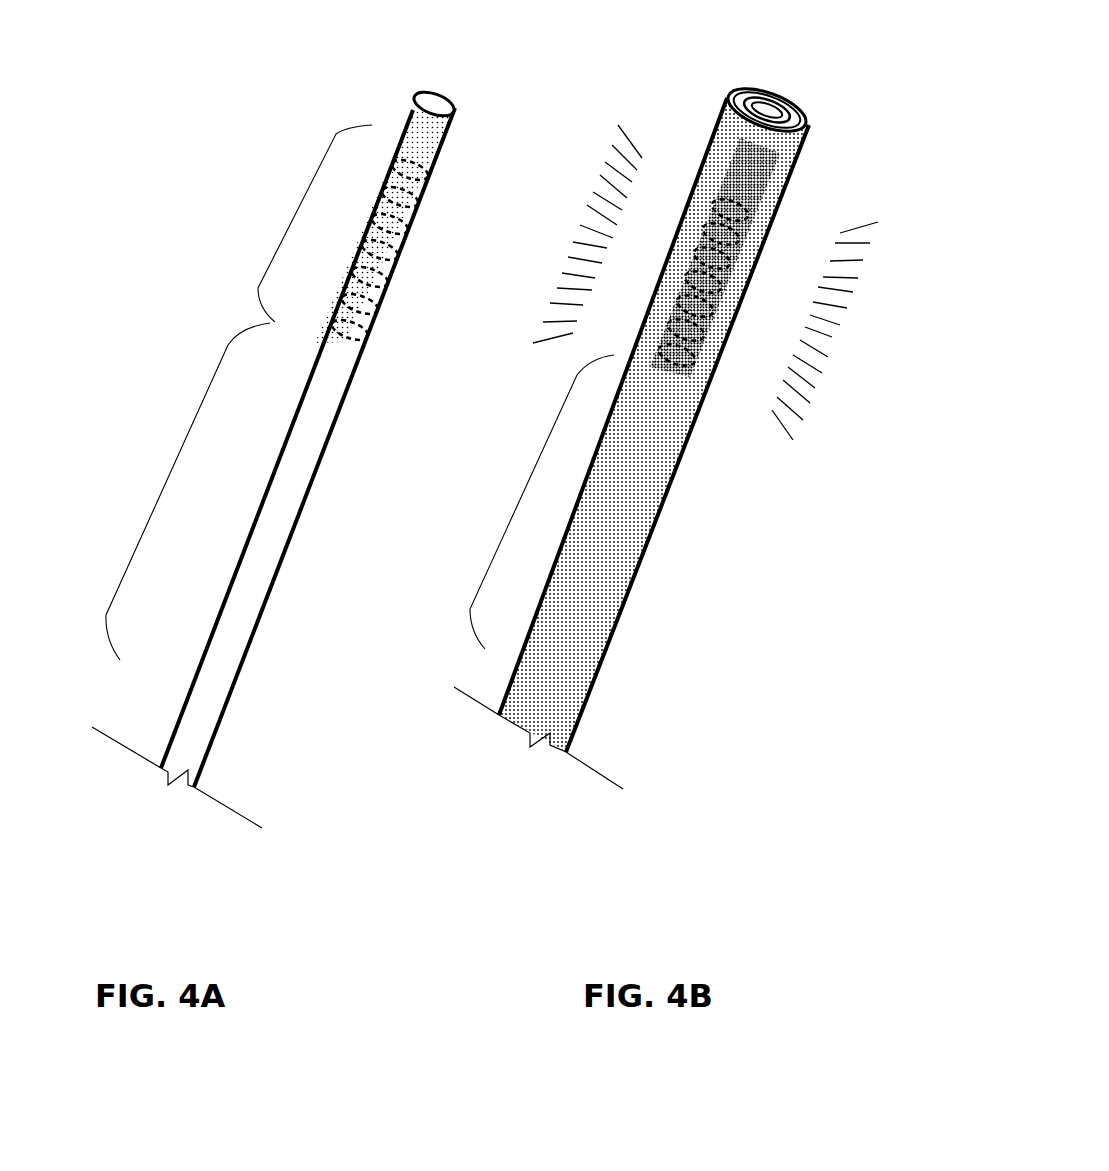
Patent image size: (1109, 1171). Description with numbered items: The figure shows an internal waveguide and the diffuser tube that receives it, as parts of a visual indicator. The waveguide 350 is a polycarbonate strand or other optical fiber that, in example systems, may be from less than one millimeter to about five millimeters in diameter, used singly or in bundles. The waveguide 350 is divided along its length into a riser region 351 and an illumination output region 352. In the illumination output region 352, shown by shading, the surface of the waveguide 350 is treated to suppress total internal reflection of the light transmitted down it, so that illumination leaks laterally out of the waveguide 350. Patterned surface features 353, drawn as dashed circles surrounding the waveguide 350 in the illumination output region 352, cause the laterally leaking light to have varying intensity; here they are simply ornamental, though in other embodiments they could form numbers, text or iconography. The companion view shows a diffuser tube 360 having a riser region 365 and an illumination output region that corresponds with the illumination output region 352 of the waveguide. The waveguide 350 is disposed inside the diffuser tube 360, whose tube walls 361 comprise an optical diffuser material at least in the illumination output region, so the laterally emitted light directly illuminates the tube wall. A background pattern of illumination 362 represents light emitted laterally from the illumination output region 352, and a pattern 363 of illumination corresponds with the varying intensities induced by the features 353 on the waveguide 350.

In FIG. 4A, the waveguide 350 is at (300, 475).
In FIG. 4B, the waveguide 350 is at (768, 105).
In FIG. 4A, the riser region 351 is at (167, 481).
In FIG. 4A, the illumination output region 352 is at (297, 210).
In FIG. 4A, the patterned surface features 353 is at (375, 310).
In FIG. 4B, the diffuser tube 360 is at (659, 484).
In FIG. 4B, the tube walls 361 is at (805, 117).
In FIG. 4B, the background pattern of illumination 362 is at (745, 180).
In FIG. 4B, the pattern of illumination 363 is at (740, 238).
In FIG. 4B, the riser region 365 is at (525, 490).